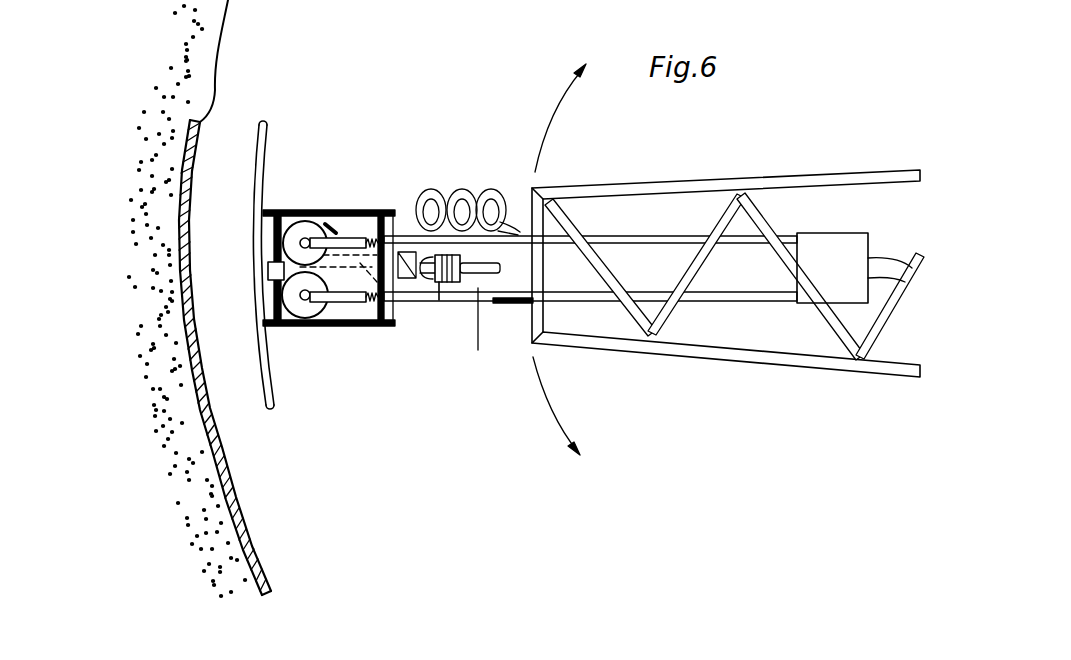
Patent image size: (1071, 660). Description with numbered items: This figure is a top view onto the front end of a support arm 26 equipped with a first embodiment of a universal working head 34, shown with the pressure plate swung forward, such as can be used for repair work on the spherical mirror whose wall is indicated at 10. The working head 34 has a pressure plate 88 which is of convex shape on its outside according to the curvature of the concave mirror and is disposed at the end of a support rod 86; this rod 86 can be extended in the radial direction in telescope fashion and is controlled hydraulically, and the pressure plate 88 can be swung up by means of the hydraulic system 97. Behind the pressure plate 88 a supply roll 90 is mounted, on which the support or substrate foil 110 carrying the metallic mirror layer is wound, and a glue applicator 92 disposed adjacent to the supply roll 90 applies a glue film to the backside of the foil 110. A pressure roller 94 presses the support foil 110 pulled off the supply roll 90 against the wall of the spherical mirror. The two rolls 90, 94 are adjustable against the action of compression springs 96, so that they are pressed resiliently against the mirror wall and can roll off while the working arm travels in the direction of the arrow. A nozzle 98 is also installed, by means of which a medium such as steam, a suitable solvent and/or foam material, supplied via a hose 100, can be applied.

The tank wall 10 is at (205, 137).
The support arm 26 is at (692, 347).
The universal working head 34 is at (412, 186).
The support rod 86 is at (478, 350).
The pressure plate 88 is at (270, 386).
The supply roll 90 is at (295, 215).
The glue applicator 92 is at (333, 230).
The pressure roller 94 is at (320, 314).
The compression springs 96 is at (373, 232).
The hydraulic system 97 is at (439, 300).
The nozzle 98 is at (395, 310).
The hose 100 is at (456, 190).
The support foil 110 is at (232, 500).